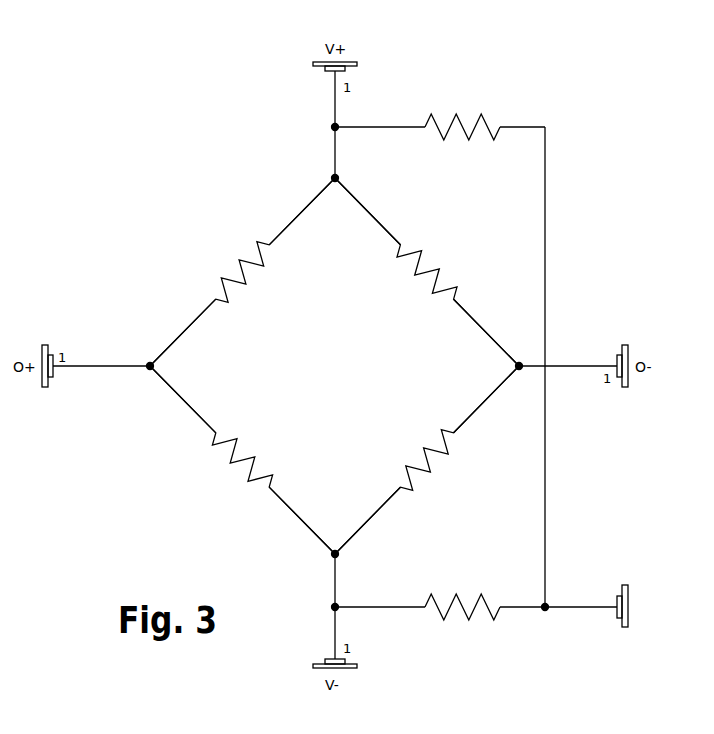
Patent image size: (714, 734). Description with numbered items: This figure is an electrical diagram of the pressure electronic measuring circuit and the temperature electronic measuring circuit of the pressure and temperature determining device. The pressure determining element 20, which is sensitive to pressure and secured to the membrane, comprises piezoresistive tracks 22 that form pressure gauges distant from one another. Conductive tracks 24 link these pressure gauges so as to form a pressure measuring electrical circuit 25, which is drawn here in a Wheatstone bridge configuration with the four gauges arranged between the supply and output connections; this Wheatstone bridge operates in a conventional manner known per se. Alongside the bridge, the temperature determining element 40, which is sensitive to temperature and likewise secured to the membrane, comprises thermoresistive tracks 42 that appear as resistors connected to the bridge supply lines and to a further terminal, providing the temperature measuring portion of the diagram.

The pressure determining element 20 is at (175, 487).
The piezoresistive tracks 22 is at (225, 298).
The conductive tracks 24 is at (312, 203).
The pressure measuring electrical circuit 25 is at (526, 666).
The temperature determining element 40 is at (538, 91).
The thermoresistive tracks 42 is at (483, 110).